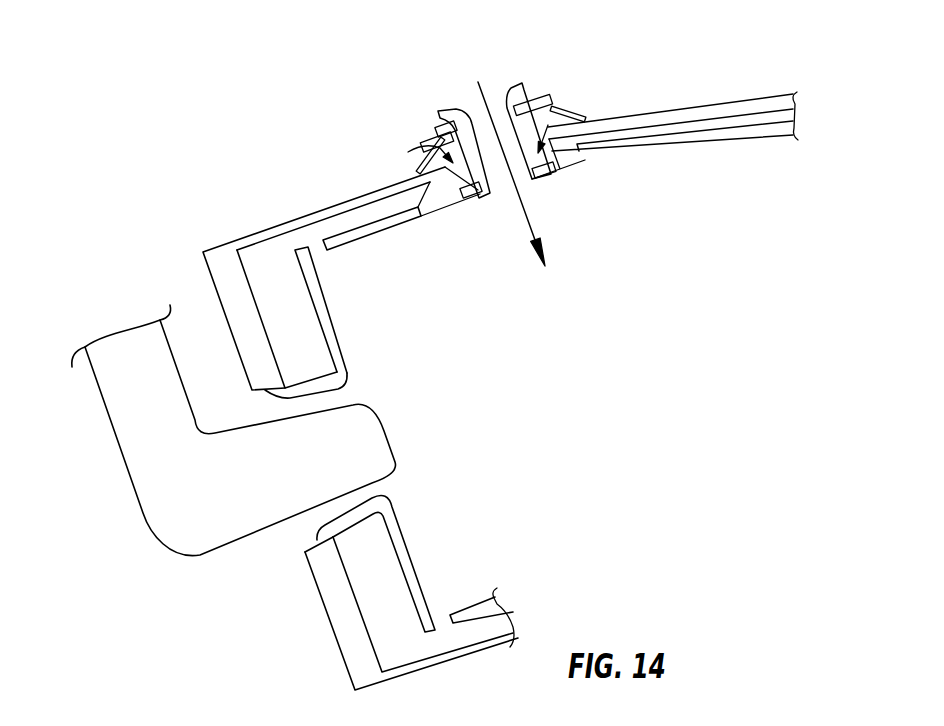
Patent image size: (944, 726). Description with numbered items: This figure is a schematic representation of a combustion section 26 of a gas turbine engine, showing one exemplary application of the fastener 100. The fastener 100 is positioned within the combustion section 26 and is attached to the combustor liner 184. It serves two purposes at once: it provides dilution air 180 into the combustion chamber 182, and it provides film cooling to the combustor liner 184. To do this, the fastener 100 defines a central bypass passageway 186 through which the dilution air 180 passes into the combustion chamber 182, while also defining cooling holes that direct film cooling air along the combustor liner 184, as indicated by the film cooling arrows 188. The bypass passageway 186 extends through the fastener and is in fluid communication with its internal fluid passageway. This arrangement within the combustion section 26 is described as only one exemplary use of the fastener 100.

The combustion section 26 is at (219, 99).
The fastener 100 is at (513, 68).
The dilution air 180 is at (535, 215).
The combustion chamber 182 is at (598, 338).
The combustor liner 184 is at (688, 138).
The central bypass passageway 186 is at (479, 122).
The film cooling arrows 188 is at (486, 212).